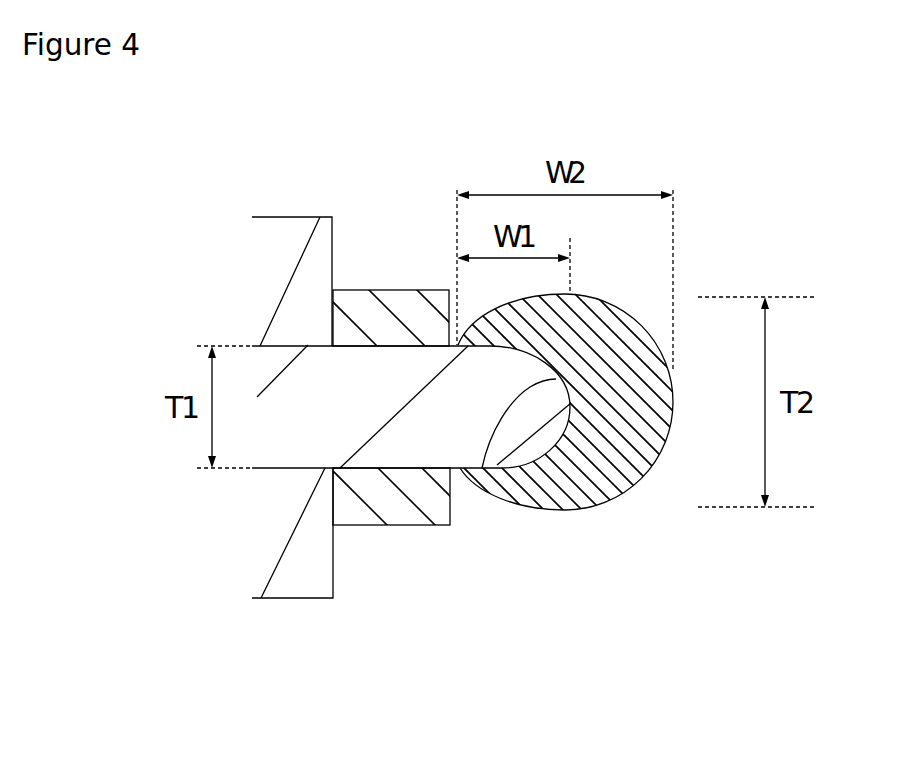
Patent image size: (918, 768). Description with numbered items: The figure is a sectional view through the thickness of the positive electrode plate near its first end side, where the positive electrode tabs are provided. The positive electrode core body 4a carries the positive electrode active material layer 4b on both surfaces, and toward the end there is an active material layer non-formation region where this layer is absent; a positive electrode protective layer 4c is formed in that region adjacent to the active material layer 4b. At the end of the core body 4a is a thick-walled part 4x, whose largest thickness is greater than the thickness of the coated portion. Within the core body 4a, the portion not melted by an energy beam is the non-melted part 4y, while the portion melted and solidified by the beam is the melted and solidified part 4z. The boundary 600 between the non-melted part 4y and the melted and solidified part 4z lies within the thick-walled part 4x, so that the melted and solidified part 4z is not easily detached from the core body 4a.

The positive electrode core body 4a is at (417, 427).
The positive electrode active material layer 4b is at (276, 246).
The positive electrode protective layer 4c is at (363, 313).
The thick-walled part 4x is at (630, 490).
The non-melted part (first region) 4y is at (289, 425).
The melted and solidified part (second region) 4z is at (558, 470).
The boundary 600 is at (482, 468).